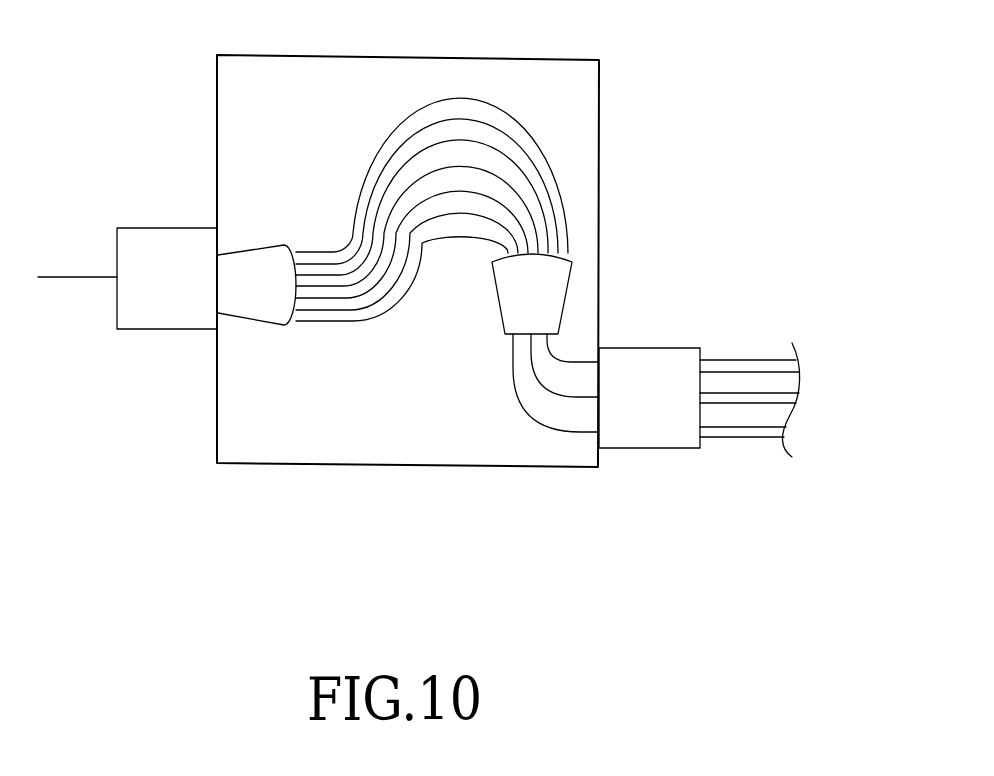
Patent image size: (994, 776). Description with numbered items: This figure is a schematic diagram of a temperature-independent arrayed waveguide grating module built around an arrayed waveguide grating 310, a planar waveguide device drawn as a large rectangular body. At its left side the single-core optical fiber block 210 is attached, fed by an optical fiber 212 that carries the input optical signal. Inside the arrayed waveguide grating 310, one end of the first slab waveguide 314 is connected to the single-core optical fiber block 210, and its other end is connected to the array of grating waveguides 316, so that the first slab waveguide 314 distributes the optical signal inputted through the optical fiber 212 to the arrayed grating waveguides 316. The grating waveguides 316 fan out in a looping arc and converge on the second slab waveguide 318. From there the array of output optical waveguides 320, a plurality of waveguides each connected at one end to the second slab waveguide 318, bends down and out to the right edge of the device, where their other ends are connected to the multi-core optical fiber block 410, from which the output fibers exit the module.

The single-core optical fiber block 210 is at (148, 220).
The optical fiber 212 is at (77, 275).
The arrayed waveguide grating 310 is at (619, 121).
The first slab waveguide 314 is at (253, 318).
The array of grating waveguides 316 is at (338, 216).
The second slab waveguide 318 is at (566, 302).
The array of output optical waveguides 320 is at (505, 395).
The multi-core optical fiber block 410 is at (706, 338).